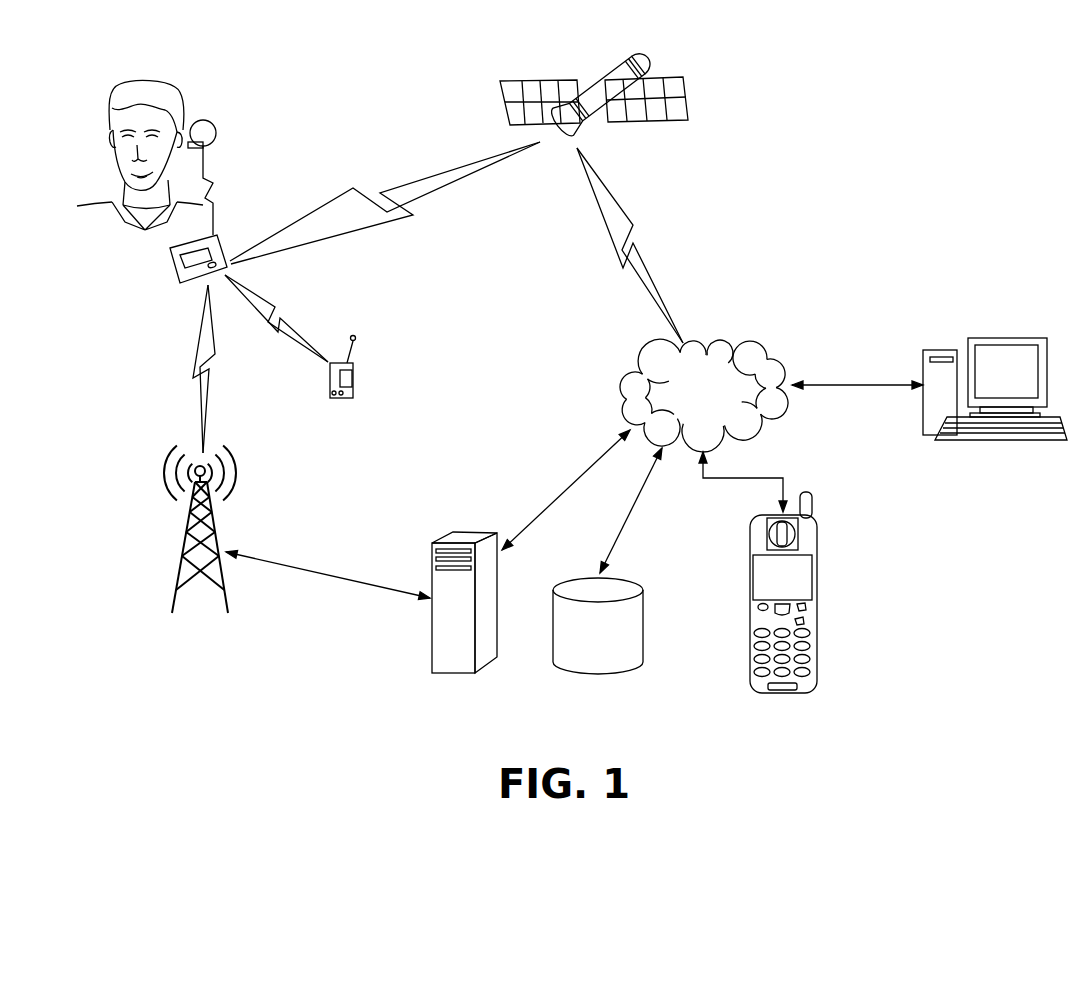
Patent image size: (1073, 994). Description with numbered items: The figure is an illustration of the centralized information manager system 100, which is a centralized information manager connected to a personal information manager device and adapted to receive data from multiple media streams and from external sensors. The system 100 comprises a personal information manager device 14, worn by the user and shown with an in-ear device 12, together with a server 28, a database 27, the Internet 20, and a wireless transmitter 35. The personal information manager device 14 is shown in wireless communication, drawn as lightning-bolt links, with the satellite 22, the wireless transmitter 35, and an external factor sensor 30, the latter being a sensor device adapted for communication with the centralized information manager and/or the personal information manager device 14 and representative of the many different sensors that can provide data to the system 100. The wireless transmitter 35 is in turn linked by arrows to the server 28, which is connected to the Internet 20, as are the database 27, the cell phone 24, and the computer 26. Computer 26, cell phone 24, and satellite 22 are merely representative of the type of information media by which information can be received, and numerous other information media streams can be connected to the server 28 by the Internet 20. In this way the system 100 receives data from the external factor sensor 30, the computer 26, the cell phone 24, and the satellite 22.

The in-ear device 12 is at (207, 115).
The personal information manager device 14 is at (170, 272).
The Internet 20 is at (748, 338).
The satellite 22 is at (607, 74).
The cell phone 24 is at (817, 587).
The computer 26 is at (1007, 338).
The database 27 is at (597, 675).
The server 28 is at (460, 675).
The external factor sensor 30 is at (328, 381).
The wireless transmitter 35 is at (180, 571).
The centralized information manager system 100 is at (807, 185).